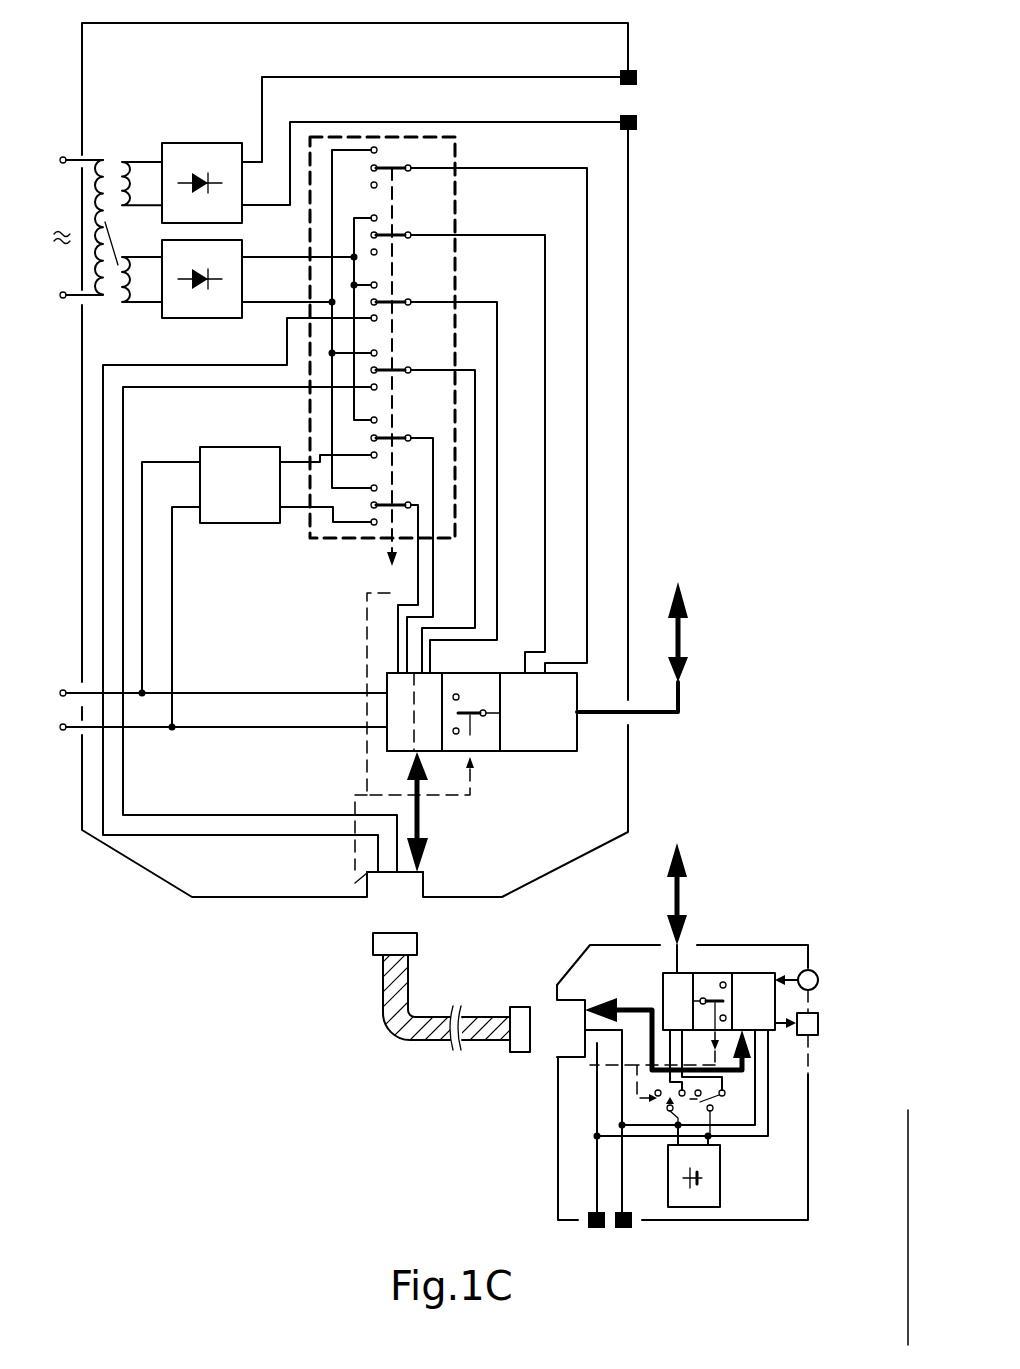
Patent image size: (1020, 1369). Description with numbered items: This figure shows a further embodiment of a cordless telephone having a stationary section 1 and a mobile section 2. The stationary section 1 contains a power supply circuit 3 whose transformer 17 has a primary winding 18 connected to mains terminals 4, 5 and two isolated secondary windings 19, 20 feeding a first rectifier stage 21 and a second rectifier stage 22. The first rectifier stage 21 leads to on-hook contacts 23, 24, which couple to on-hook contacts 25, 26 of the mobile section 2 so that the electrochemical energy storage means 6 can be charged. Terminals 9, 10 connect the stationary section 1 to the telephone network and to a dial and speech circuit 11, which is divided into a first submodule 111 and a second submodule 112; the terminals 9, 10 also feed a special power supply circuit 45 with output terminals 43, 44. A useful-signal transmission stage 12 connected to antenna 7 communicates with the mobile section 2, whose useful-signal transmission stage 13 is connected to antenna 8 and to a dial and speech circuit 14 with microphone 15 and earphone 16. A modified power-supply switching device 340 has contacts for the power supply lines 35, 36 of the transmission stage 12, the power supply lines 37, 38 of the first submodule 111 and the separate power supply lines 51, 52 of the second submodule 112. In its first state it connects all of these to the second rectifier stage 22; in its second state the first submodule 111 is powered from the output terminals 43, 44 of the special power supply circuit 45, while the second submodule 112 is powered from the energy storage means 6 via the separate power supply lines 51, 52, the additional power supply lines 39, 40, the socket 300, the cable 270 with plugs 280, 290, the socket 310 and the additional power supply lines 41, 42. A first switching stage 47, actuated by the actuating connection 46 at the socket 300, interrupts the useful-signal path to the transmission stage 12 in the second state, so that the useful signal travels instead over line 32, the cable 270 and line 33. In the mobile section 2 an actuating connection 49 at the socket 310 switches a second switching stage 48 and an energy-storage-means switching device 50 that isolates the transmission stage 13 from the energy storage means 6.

The stationary section 1 is at (518, 24).
The mobile section 2 is at (720, 1222).
The power supply circuit 3 is at (165, 112).
The terminal 4 is at (62, 157).
The terminal 5 is at (62, 298).
The electrochemical energy storage means 6 is at (722, 1170).
The antenna 7 is at (690, 600).
The antenna 8 is at (685, 862).
The terminal 9 is at (62, 690).
The terminal 10 is at (62, 730).
The dial and speech circuit 11 is at (405, 748).
The useful-signal transmission stage 12 is at (560, 755).
The useful-signal transmission stage 13 is at (660, 1000).
The dial and speech circuit 14 is at (765, 970).
The microphone 15 is at (820, 975).
The earphone 16 is at (820, 1025).
The transformer 17 is at (111, 298).
The primary winding 18 is at (110, 236).
The secondary winding 19 is at (123, 165).
The secondary winding 20 is at (124, 289).
The first rectifier stage 21 is at (198, 143).
The second rectifier stage 22 is at (247, 243).
The on-hook contact 23 is at (640, 72).
The on-hook contact 24 is at (640, 122).
The on-hook contact 25 is at (598, 1230).
The on-hook contact 26 is at (625, 1230).
The line 32 is at (420, 832).
The line 33 is at (625, 1008).
The power supply line 35 is at (590, 405).
The power supply line 36 is at (545, 485).
The power supply line 37 is at (433, 497).
The power supply line 38 is at (418, 593).
The additional power supply line 39 is at (103, 437).
The additional power supply line 40 is at (125, 445).
The additional power supply line 41 is at (597, 1080).
The additional power supply line 42 is at (620, 1095).
The output terminal 43 is at (295, 460).
The output terminal 44 is at (292, 510).
The special power supply circuit 45 is at (233, 525).
The actuating connection 46 is at (362, 648).
The first switching stage 47 is at (480, 752).
The second switching stage 48 is at (712, 972).
The actuating connection 49 is at (565, 1090).
The energy-storage-means switching device 50 is at (722, 1100).
The separate power supply line 51 is at (498, 328).
The separate power supply line 52 is at (475, 430).
The first submodule 111 is at (387, 745).
The second submodule 112 is at (425, 742).
The cable 270 is at (392, 1043).
The plug 280 is at (372, 950).
The plug 290 is at (520, 1055).
The socket 300 is at (392, 885).
The socket 310 is at (572, 1035).
The modified power-supply switching device 340 is at (458, 284).